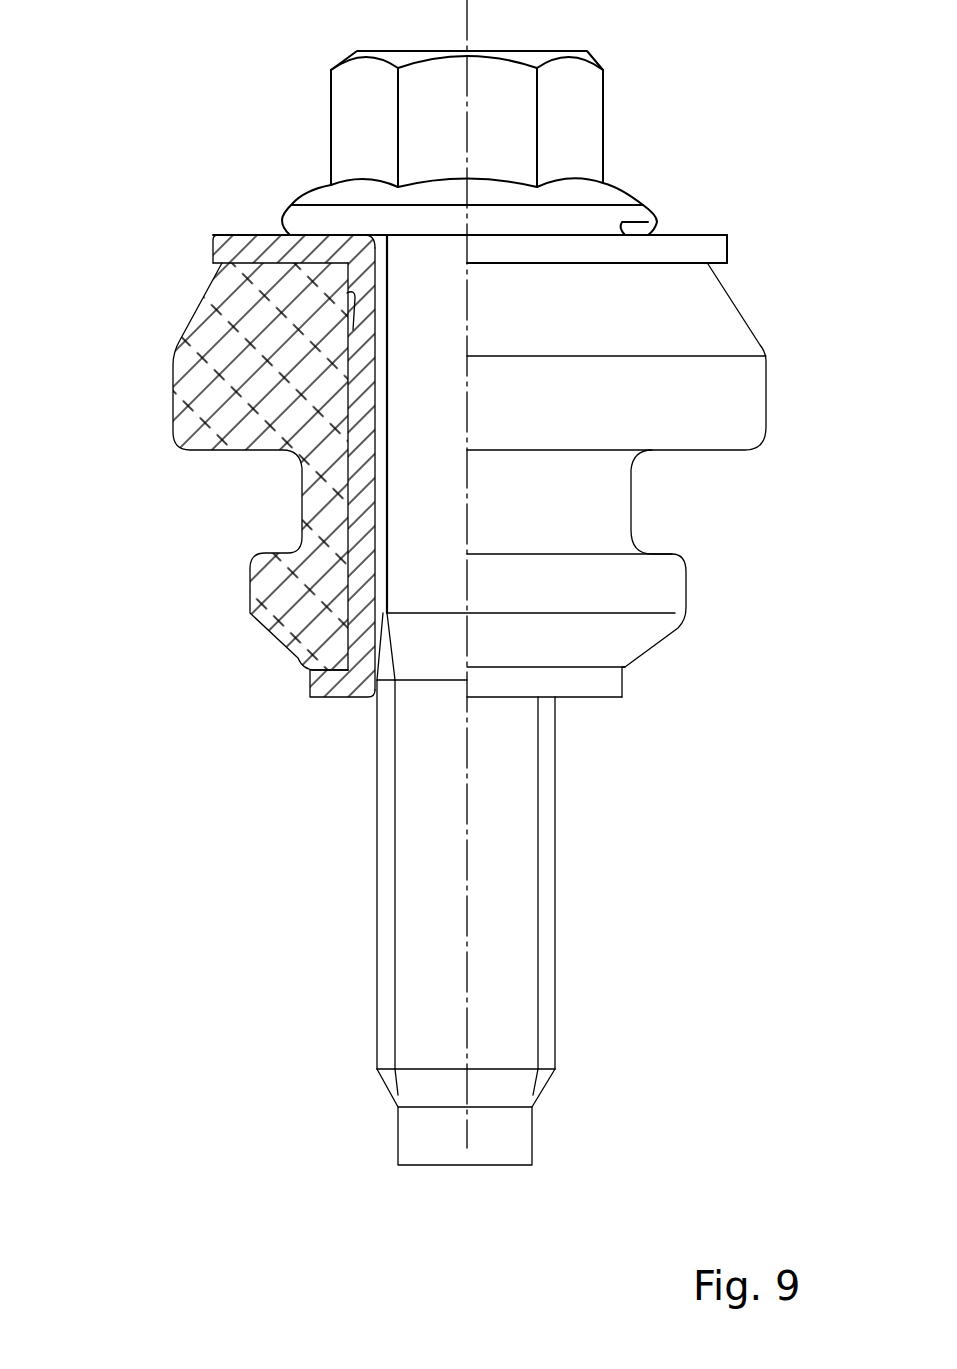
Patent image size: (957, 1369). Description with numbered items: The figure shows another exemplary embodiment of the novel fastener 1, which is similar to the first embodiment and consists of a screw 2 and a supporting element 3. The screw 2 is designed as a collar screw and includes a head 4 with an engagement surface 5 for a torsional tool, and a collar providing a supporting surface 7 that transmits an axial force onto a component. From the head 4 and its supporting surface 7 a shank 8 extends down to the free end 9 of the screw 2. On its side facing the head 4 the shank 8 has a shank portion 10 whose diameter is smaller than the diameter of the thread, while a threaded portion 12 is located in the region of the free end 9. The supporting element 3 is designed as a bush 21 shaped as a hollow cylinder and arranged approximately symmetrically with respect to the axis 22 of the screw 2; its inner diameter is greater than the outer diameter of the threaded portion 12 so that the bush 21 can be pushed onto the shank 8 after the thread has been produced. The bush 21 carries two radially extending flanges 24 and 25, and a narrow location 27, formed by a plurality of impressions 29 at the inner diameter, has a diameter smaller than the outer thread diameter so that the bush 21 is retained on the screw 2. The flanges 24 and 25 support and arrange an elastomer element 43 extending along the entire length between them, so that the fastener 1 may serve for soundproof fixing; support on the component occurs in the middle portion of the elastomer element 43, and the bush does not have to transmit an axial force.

The fastener 1 is at (466, 700).
The screw 2 is at (466, 700).
The supporting element 3 is at (217, 423).
The head 4 is at (628, 179).
The engagement surface 5 is at (578, 127).
The supporting surface 7 is at (625, 222).
The shank 8 is at (236, 424).
The free end 9 is at (569, 1150).
The shank portion 10 is at (405, 482).
The threaded portion 12 is at (588, 956).
The bush 21 is at (382, 370).
The axis 22 is at (473, 520).
The flange 24 is at (230, 189).
The flange 25 is at (327, 678).
The narrow location 27 is at (203, 286).
The impressions 29 is at (330, 299).
The elastomer element 43 is at (242, 395).